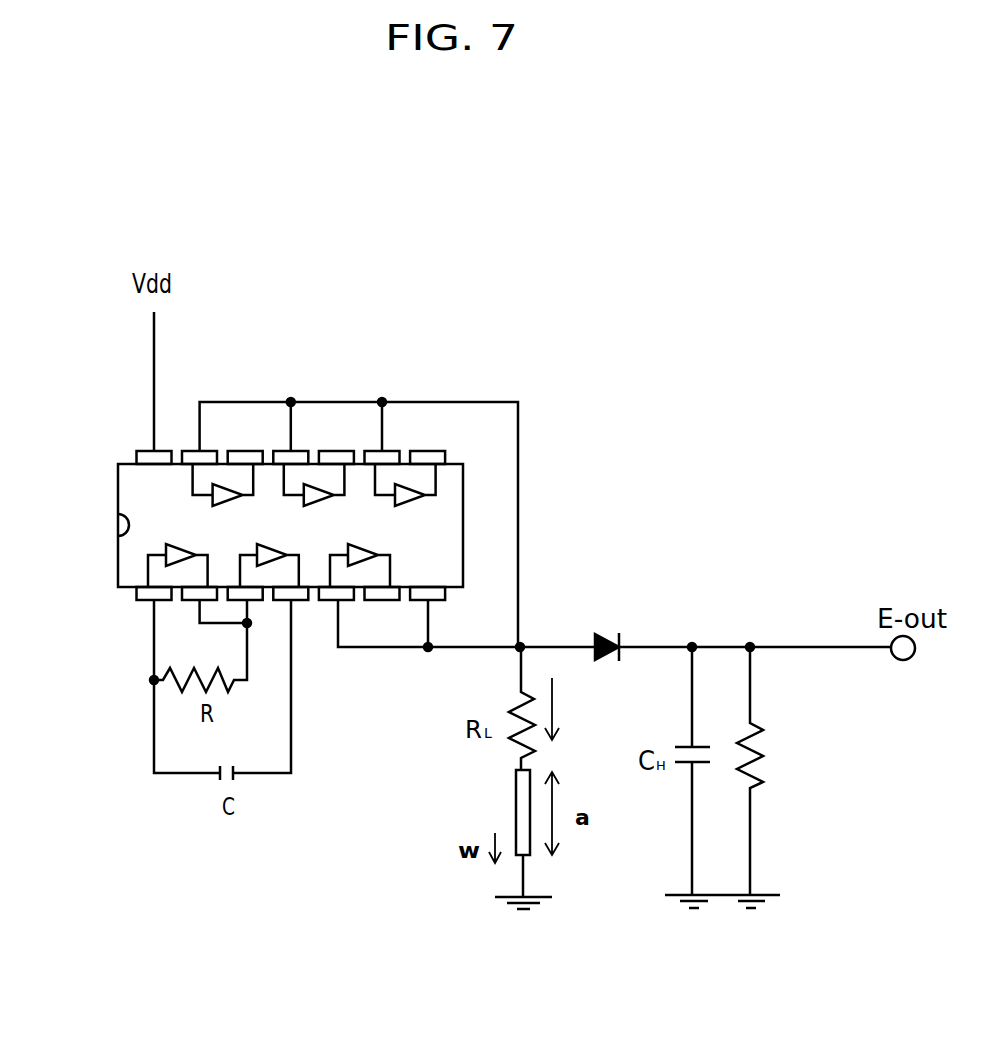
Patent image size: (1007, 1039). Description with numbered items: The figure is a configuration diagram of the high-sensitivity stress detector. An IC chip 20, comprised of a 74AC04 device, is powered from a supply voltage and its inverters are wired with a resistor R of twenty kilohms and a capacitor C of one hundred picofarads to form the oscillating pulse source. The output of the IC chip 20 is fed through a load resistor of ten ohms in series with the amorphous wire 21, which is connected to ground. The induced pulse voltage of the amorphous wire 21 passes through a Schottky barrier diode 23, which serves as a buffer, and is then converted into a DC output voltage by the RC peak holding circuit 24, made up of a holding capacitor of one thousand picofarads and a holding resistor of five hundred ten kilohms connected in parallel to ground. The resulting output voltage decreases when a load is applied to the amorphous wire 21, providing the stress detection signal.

The IC chip 20 is at (115, 490).
The amorphous wire 21 is at (516, 803).
The Schottky barrier diode 23 is at (625, 638).
The RC peak holding circuit 24 is at (753, 735).